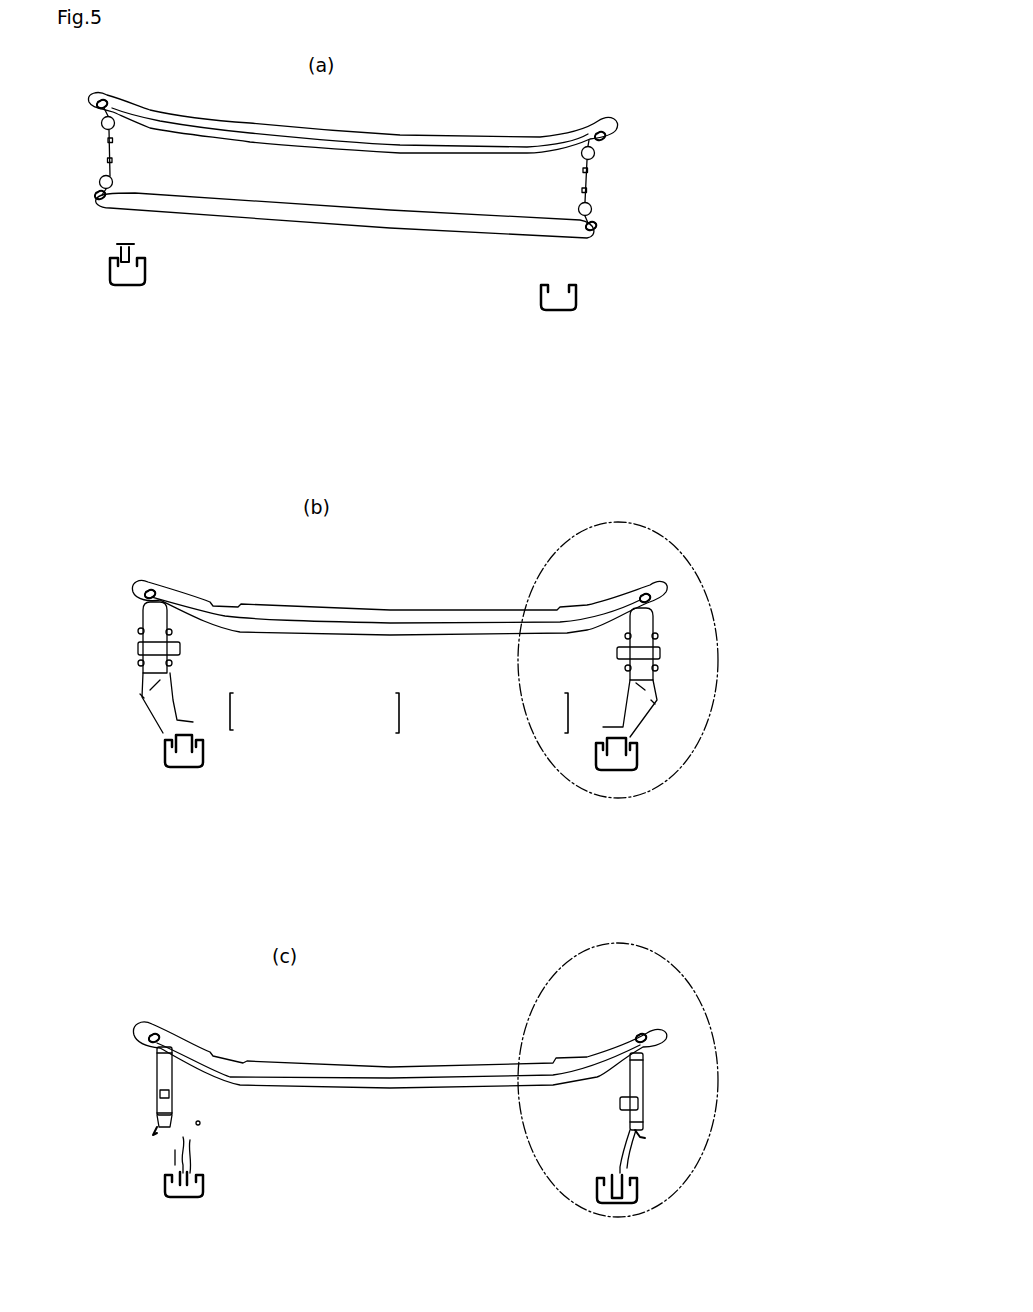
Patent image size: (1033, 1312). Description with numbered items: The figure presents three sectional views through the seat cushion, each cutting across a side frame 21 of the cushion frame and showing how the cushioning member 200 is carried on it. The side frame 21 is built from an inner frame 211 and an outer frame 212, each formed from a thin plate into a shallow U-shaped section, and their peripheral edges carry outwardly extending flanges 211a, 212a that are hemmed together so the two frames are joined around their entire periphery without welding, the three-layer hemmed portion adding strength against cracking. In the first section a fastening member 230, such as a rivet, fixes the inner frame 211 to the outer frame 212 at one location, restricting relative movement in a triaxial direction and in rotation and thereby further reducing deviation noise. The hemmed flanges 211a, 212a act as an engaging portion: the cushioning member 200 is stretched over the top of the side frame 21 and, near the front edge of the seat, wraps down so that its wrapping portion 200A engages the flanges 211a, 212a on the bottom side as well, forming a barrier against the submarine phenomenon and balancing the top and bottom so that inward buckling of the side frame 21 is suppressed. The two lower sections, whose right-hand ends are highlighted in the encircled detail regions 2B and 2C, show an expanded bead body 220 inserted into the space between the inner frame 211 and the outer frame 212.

In FIG. 5A, the cushioning member 200 is at (372, 133).
In FIG. 5B, the cushioning member 200 is at (393, 607).
In FIG. 5C, the cushioning member 200 is at (367, 1064).
In FIG. 5A, the wrapping portion 200A is at (352, 220).
In FIG. 5A, the inner frame 211 is at (113, 127).
In FIG. 5B, the inner frame 211 is at (160, 600).
In FIG. 5C, the inner frame 211 is at (172, 1093).
In FIG. 5A, the flange 211a is at (105, 104).
In FIG. 5B, the flange 211a is at (152, 590).
In FIG. 5C, the flange 211a is at (150, 1032).
In FIG. 5A, the outer frame 212 is at (104, 128).
In FIG. 5B, the outer frame 212 is at (143, 620).
In FIG. 5C, the outer frame 212 is at (157, 1072).
In FIG. 5A, the flange 212a is at (377, 206).
In FIG. 5B, the flange 212a is at (417, 667).
In FIG. 5C, the flange 212a is at (441, 1080).
In FIG. 5A, the fastening member 230 is at (113, 163).
In FIG. 5A, the side frame 21 is at (604, 163).
In FIG. 5B, the expanded bead body 220 is at (138, 634).
In FIG. 5C, the expanded bead body 220 is at (163, 1093).
In FIG. 5B, the enlarged detail region 2B is at (718, 617).
In FIG. 5C, the enlarged detail region 2C is at (677, 970).